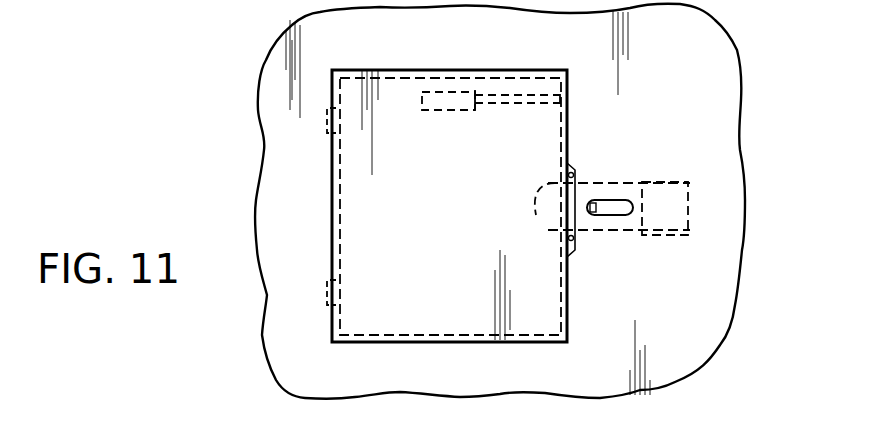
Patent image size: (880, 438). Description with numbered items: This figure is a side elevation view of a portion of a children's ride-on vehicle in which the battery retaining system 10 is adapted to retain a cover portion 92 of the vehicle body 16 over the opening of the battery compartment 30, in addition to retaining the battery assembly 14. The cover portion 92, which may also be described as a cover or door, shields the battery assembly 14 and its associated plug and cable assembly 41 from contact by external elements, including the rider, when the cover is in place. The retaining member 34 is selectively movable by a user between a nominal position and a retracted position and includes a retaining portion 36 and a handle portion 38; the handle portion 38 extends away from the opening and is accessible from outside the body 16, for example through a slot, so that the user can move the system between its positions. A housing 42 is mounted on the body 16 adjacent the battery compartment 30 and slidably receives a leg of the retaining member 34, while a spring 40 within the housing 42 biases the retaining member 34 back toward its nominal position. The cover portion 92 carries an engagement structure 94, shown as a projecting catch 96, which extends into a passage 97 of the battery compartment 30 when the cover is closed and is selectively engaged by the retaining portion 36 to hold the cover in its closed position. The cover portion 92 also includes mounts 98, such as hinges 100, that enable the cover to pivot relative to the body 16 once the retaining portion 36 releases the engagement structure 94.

The battery retaining system 10 is at (663, 89).
The battery assembly 14 is at (333, 218).
The vehicle body 16 is at (308, 178).
The battery compartment 30 is at (331, 247).
The retaining member 34 is at (548, 229).
The retaining portion 36 is at (533, 212).
The handle portion 38 is at (593, 214).
The spring 40 is at (688, 222).
The plug and cable assembly 41 is at (458, 68).
The housing 42 is at (677, 178).
The cover portion 92 is at (440, 286).
The engagement structure 94 is at (576, 258).
The catch 96 is at (572, 244).
The passage 97 is at (577, 171).
The mounts 98 is at (328, 308).
The hinges 100 is at (328, 125).